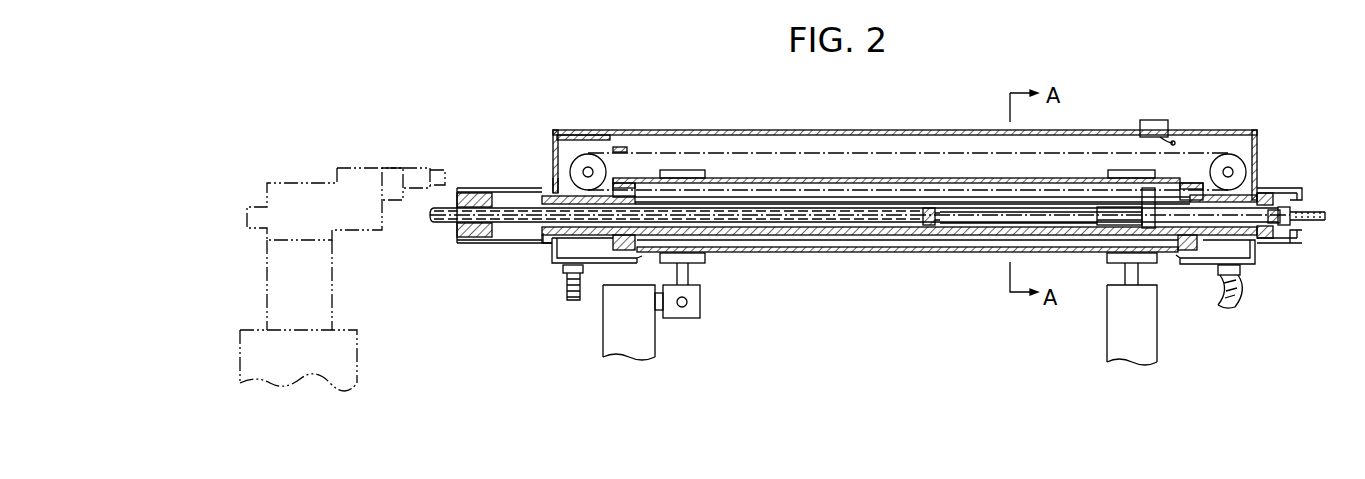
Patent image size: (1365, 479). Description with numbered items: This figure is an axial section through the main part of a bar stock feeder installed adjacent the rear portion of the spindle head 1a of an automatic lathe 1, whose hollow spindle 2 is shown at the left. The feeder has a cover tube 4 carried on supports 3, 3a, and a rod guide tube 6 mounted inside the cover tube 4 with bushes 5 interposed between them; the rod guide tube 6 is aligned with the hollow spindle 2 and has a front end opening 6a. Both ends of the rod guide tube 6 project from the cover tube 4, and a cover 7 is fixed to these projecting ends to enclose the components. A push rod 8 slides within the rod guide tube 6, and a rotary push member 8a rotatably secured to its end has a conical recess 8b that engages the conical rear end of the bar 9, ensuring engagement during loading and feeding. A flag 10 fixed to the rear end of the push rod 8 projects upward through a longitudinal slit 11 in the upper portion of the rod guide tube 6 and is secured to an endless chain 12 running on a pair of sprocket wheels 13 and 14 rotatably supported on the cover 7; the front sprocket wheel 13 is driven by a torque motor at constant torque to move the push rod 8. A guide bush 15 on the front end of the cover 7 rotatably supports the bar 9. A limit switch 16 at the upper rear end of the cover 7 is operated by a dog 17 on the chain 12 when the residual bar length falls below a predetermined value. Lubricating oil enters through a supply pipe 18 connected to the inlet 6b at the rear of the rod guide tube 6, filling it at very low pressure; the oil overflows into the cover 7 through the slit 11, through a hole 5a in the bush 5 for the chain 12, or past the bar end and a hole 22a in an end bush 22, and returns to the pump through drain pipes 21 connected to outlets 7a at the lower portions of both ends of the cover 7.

The automatic lathe 1 is at (256, 290).
The spindle head 1a is at (394, 168).
The hollow spindle 2 is at (247, 207).
The support 3 is at (620, 338).
The support 3a is at (1148, 345).
The cover tube 4 is at (1090, 252).
The bush 5 is at (610, 250).
The hole 5a is at (603, 178).
The rod guide tube 6 is at (855, 236).
The front end opening 6a is at (540, 188).
The inlet 6b is at (1280, 190).
The cover 7 is at (1102, 131).
The outlet 7a is at (565, 272).
The push rod 8 is at (977, 216).
The rotary push member 8a is at (930, 225).
The conical recess 8b is at (930, 208).
The bar 9 is at (760, 223).
The flag 10 is at (1150, 188).
The slit 11 is at (878, 186).
The endless chain 12 is at (742, 133).
The front sprocket wheel 13 is at (573, 155).
The sprocket wheel 14 is at (1240, 165).
The guide bush 15 is at (450, 222).
The limit switch 16 is at (1157, 120).
The dog 17 is at (624, 147).
The supply pipe 18 is at (1310, 212).
The drain pipe 21 is at (565, 292).
The end bush 22 is at (553, 178).
The hole 22a is at (548, 240).